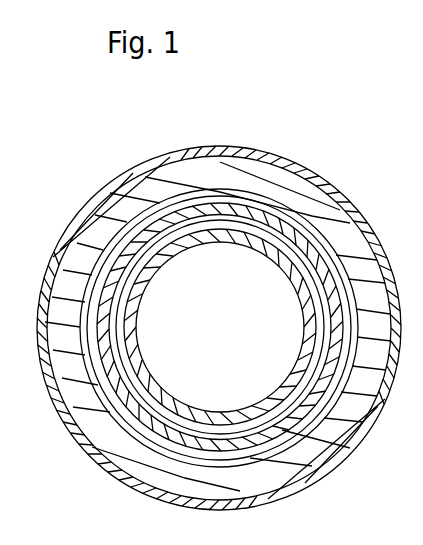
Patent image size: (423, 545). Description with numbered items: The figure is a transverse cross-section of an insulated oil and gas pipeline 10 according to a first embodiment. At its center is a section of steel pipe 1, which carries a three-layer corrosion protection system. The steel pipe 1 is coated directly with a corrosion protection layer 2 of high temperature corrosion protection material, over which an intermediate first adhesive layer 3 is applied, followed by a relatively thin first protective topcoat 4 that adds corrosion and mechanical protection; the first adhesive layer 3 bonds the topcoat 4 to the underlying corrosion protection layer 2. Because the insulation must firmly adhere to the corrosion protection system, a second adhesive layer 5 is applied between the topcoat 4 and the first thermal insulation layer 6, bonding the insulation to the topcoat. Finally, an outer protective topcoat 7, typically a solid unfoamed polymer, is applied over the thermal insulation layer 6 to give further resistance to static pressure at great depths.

The insulated oil and gas pipeline 10 is at (262, 137).
The outer protective topcoat 7 is at (108, 201).
The first thermal insulation layer 6 is at (178, 176).
The second adhesive layer 5 is at (123, 425).
The first protective topcoat 4 is at (306, 237).
The first adhesive layer 3 is at (316, 290).
The corrosion protection layer 2 is at (165, 418).
The steel pipe 1 is at (262, 408).